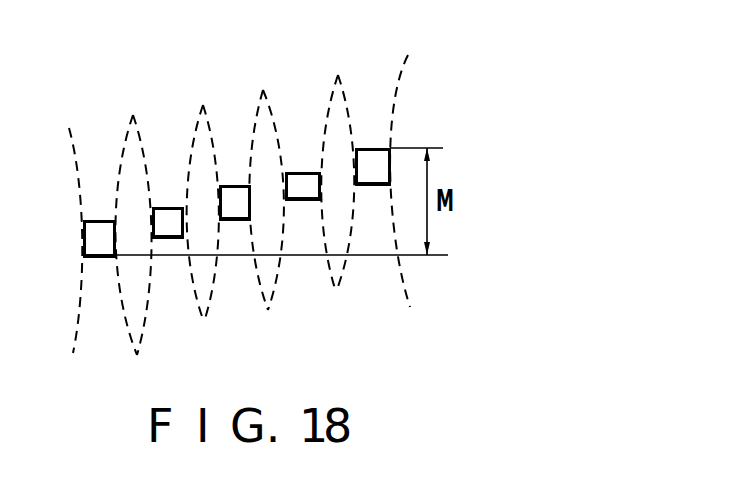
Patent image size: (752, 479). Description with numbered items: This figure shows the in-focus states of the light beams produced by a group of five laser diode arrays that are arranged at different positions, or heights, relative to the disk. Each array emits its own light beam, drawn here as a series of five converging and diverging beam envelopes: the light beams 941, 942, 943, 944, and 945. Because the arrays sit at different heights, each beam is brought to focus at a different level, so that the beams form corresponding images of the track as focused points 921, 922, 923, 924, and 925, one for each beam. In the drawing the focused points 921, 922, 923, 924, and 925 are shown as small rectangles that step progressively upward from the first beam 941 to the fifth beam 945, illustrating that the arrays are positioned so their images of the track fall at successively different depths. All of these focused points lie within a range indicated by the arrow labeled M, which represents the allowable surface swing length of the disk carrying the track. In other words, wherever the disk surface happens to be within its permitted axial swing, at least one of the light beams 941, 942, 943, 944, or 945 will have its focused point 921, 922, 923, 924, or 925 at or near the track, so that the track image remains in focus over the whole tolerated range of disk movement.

The light beam 941 is at (97, 200).
The light beam 942 is at (163, 196).
The light beam 943 is at (230, 172).
The light beam 944 is at (297, 152).
The light beam 945 is at (369, 136).
The focused point 921 is at (93, 257).
The focused point 922 is at (167, 238).
The focused point 923 is at (232, 220).
The focused point 924 is at (298, 200).
The focused point 925 is at (372, 185).